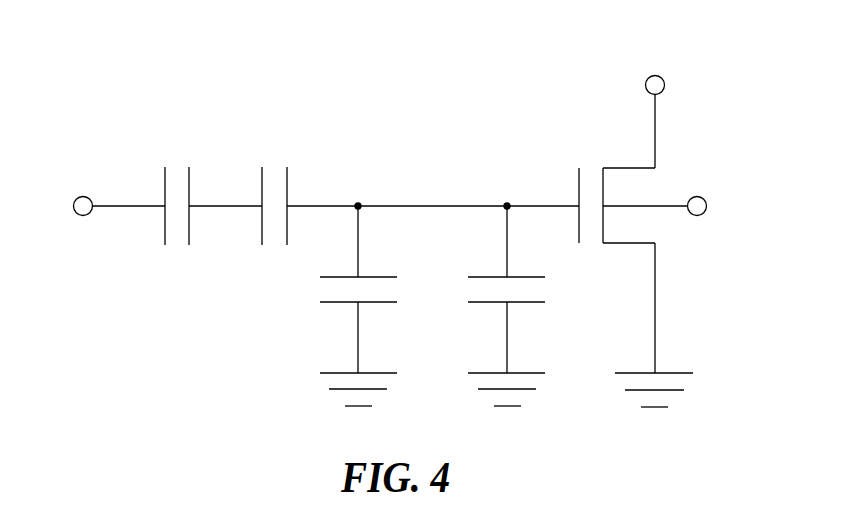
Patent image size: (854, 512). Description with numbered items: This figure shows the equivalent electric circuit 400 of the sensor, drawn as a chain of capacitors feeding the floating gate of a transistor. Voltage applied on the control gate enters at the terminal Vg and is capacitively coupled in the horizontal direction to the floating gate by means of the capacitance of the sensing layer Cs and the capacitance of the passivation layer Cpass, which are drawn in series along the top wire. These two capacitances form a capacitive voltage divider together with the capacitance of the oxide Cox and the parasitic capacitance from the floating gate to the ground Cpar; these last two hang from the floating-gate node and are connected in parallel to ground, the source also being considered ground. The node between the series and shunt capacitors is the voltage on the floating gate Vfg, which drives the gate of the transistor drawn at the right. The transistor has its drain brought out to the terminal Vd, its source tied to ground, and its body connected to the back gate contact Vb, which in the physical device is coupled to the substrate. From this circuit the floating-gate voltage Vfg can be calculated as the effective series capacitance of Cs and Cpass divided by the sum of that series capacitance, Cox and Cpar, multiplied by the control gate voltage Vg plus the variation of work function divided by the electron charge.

The equivalent electric circuit 400 is at (150, 61).
The control gate voltage Vg is at (118, 193).
The capacitance of the sensing layer Cs is at (213, 192).
The capacitance of the passivation layer Cpass is at (304, 192).
The voltage on the floating gate Vfg is at (467, 189).
The parasitic capacitance from the floating gate to the ground Cpar is at (379, 306).
The capacitance of the oxide Cox is at (525, 306).
The drain voltage Vd is at (655, 110).
The back gate contact Vb is at (656, 194).